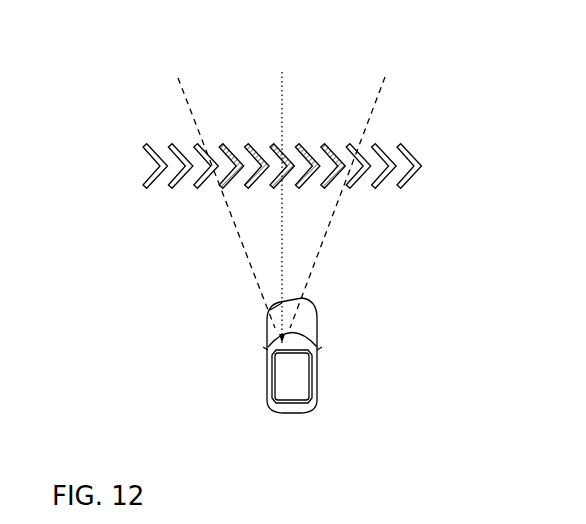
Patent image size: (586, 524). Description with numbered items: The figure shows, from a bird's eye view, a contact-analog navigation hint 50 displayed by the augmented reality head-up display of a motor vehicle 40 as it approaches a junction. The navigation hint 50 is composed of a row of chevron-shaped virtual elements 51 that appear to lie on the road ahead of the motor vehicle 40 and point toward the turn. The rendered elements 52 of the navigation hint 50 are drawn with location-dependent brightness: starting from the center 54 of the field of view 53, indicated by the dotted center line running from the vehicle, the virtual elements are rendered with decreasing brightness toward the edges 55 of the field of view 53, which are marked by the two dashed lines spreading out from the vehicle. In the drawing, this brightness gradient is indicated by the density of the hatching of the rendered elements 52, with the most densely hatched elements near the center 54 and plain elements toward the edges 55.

The motor vehicle 40 is at (305, 412).
The contact-analog navigation hint 50 is at (309, 130).
The virtual element 51 is at (408, 177).
The rendered element 52 is at (247, 143).
The field of view 53 is at (233, 220).
The center of the field of view 54 is at (282, 95).
The edge of the field of view 55 is at (281, 197).